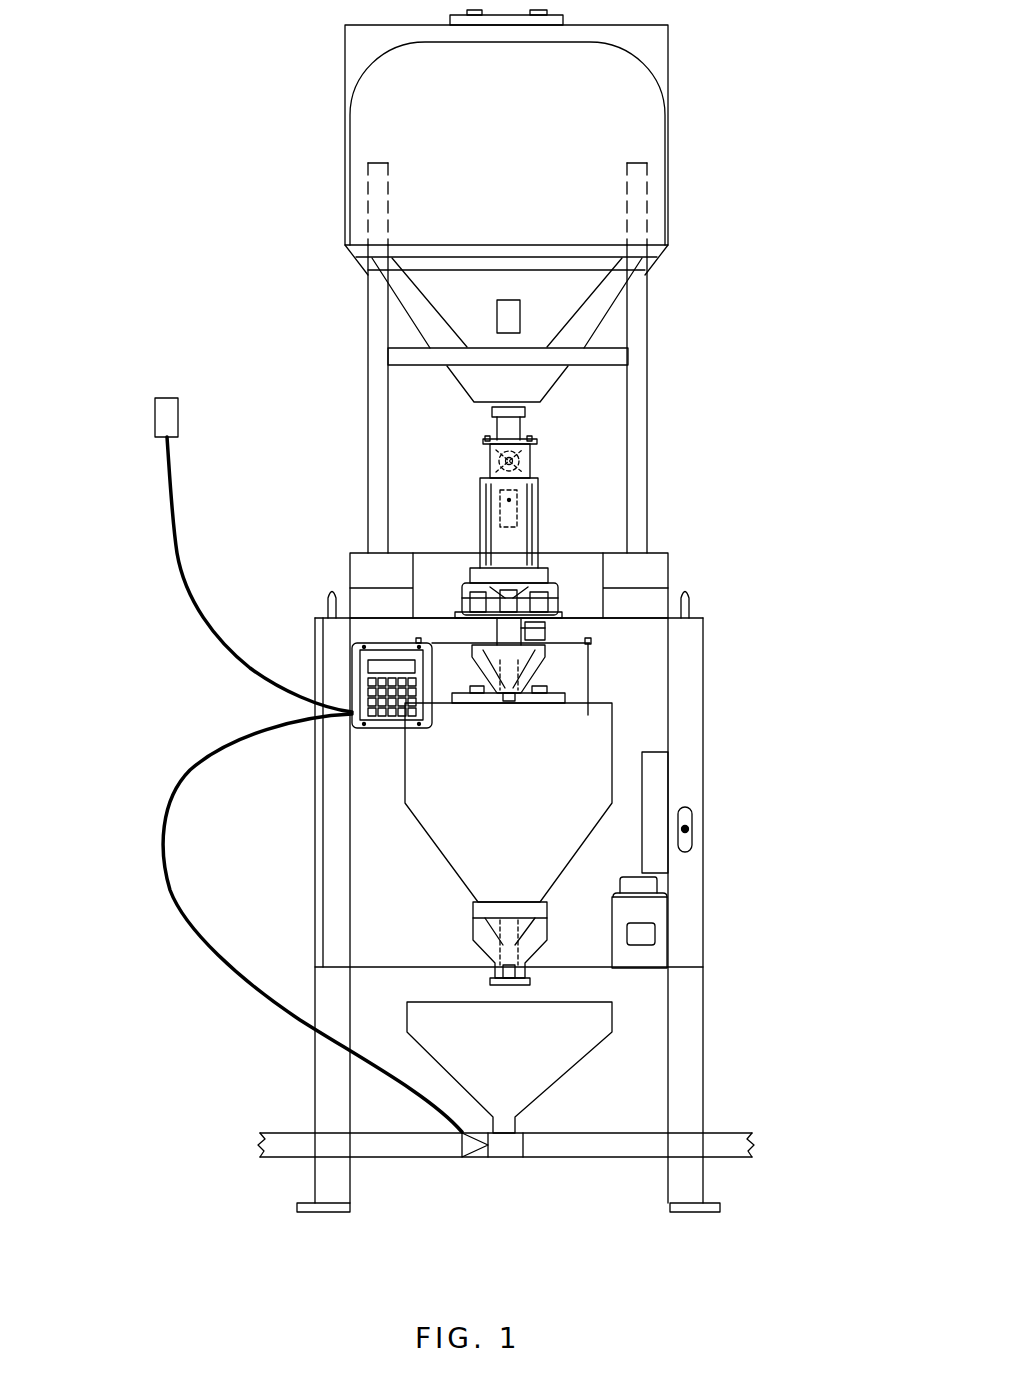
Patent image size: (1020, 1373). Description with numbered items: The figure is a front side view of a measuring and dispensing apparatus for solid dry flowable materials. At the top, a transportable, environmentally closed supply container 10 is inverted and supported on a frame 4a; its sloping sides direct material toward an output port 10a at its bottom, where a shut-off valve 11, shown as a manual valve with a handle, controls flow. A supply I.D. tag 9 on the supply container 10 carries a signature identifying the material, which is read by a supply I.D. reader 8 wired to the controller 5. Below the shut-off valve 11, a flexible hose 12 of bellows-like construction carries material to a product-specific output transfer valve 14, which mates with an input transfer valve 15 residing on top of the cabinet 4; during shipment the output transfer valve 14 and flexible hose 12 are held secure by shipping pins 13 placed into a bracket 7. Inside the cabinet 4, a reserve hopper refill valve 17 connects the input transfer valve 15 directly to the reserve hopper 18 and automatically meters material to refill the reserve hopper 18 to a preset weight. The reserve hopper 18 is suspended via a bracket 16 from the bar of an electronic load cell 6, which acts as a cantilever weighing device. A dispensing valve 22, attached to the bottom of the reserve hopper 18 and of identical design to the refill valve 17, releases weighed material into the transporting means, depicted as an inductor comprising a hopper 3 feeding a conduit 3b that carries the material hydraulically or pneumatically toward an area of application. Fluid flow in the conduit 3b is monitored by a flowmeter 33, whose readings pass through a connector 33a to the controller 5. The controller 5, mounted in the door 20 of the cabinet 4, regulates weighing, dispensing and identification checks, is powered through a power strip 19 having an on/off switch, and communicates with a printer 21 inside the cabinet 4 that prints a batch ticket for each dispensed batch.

The hopper 3 is at (612, 1022).
The conduit 3b is at (575, 1160).
The cabinet 4 is at (315, 898).
The frame 4a is at (368, 366).
The controller 5 is at (380, 733).
The electronic load cell 6 is at (463, 630).
The bracket 7 is at (487, 440).
The supply I.D. reader 8 is at (153, 404).
The supply I.D. tag 9 is at (497, 307).
The supply container 10 is at (372, 100).
The output port 10a is at (523, 422).
The shut-off valve 11 is at (535, 440).
The flexible hose 12 is at (480, 545).
The shipping pins 13 is at (480, 497).
The output transfer valve 14 is at (543, 572).
The input transfer valve 15 is at (560, 610).
The bracket 16 is at (590, 662).
The reserve hopper refill valve 17 is at (545, 672).
The reserve hopper 18 is at (598, 752).
The power strip 19 is at (658, 778).
The door 20 is at (690, 830).
The printer 21 is at (640, 935).
The dispensing valve 22 is at (540, 958).
The flowmeter 33 is at (470, 1152).
The connector 33a is at (167, 790).